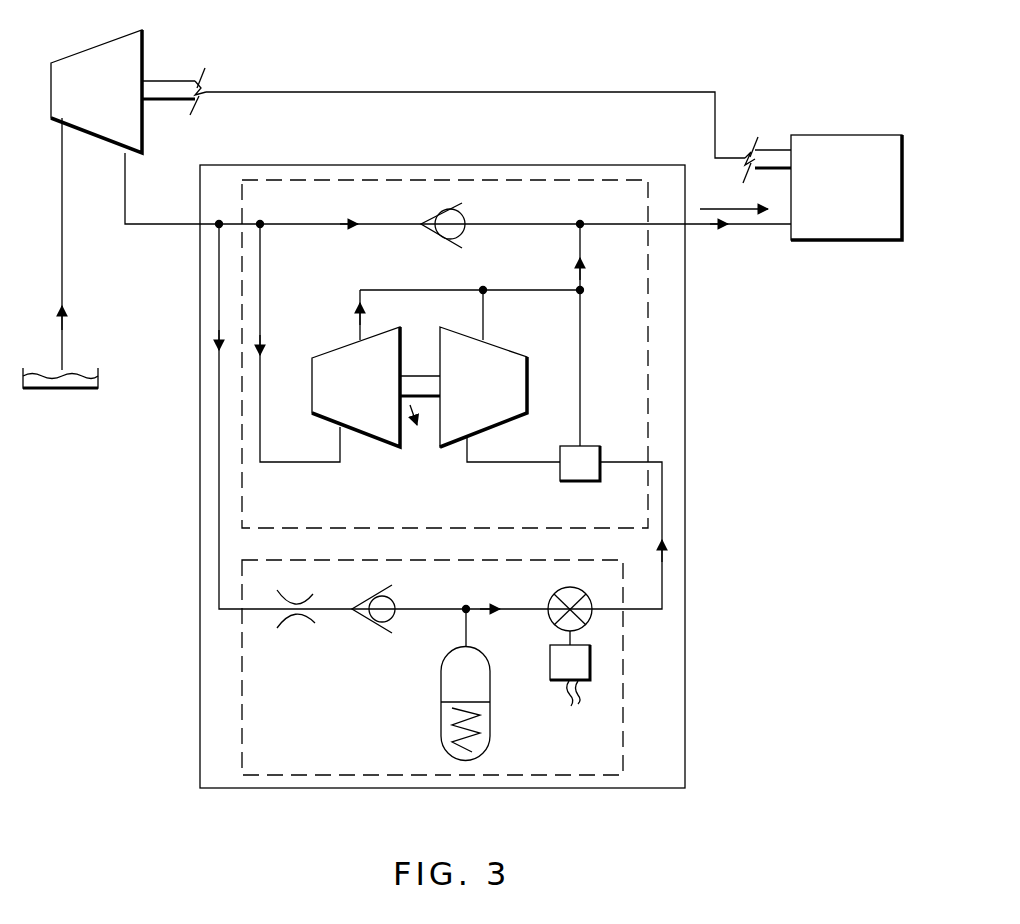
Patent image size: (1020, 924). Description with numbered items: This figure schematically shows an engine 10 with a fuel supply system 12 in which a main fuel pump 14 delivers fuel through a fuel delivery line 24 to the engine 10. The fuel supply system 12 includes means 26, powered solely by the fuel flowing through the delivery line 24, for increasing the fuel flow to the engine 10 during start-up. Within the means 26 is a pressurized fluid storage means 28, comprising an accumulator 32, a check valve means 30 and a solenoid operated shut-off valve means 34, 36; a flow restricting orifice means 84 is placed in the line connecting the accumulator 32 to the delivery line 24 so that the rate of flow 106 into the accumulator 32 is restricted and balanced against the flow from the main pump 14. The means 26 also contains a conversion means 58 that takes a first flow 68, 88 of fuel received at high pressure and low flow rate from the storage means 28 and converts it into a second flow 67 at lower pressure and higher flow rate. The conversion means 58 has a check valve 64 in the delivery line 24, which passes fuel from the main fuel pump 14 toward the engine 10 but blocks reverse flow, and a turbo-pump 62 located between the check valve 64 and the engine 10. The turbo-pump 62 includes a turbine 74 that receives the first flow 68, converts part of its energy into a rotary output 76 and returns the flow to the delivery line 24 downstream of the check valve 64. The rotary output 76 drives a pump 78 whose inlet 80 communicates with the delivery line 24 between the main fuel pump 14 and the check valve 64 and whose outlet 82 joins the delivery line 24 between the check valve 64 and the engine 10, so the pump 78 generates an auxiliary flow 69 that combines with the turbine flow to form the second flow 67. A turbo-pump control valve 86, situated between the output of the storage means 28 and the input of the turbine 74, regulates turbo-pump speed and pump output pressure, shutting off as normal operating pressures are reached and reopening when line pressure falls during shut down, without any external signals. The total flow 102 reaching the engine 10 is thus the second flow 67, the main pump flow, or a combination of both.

The engine 10 is at (831, 205).
The fuel supply system 12 is at (296, 58).
The main fuel pump 14 is at (86, 105).
The fuel delivery line 24 is at (545, 224).
The means for increasing fuel flow 26 is at (687, 708).
The pressurized fluid storage means 28 is at (625, 708).
The check valve means 30 is at (370, 630).
The accumulator 32 is at (448, 755).
The solenoid operated shut-off valve means 34 is at (557, 592).
The solenoid operated shut-off valve means 36 is at (553, 681).
The conversion means 58 is at (650, 312).
The turbo-pump 62 is at (417, 475).
The check valve 64 is at (440, 203).
The second flow of fuel 67 is at (716, 230).
The first flow of fuel 68 is at (487, 315).
The auxiliary flow of fluid 69 is at (358, 300).
The turbine 74 is at (464, 403).
The rotary output 76 is at (412, 368).
The pump 78 is at (343, 403).
The inlet 80 is at (262, 260).
The outlet 82 is at (500, 290).
The flow restricting orifice means 84 is at (285, 618).
The turbo-pump control valve 86 is at (552, 479).
The first flow of pressurized fluid 88 is at (665, 540).
The total flow of fuel 102 is at (726, 208).
The flow into the accumulator 106 is at (218, 340).